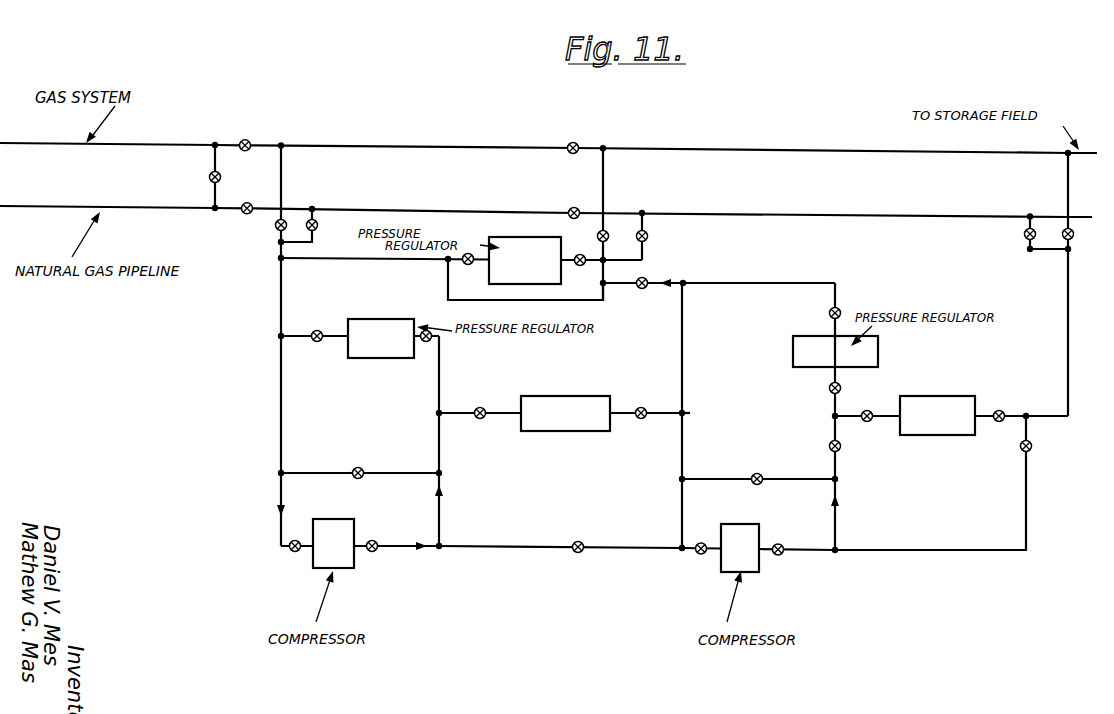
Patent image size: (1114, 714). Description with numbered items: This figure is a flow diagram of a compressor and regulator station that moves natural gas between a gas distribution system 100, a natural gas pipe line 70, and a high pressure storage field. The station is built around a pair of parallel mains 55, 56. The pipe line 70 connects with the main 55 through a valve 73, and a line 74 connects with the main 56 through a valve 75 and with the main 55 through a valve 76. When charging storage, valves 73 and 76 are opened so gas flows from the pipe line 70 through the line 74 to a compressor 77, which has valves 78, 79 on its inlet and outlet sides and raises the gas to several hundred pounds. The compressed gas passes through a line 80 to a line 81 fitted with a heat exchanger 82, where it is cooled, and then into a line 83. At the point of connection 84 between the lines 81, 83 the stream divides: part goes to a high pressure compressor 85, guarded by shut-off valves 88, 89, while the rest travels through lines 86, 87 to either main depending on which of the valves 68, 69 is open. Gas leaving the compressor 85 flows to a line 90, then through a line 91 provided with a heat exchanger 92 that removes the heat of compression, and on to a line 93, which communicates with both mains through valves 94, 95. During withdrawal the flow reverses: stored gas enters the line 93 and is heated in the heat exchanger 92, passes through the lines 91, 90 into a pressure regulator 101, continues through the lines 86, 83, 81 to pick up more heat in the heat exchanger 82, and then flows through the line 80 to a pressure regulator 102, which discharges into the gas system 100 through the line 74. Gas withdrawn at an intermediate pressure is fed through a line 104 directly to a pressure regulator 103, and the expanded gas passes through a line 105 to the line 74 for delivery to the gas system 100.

The gas distribution system 100 is at (184, 144).
The pipe line 70 is at (135, 207).
The main 55 is at (418, 211).
The main 56 is at (482, 149).
The valve 73 is at (247, 203).
The line 74 is at (281, 392).
The valve 75 is at (275, 227).
The valve 76 is at (317, 225).
The compressor 77 is at (344, 519).
The valve 78 is at (292, 552).
The valve 79 is at (378, 552).
The line 80 is at (442, 500).
The line 81 is at (450, 410).
The heat exchanger 82 is at (558, 395).
The line 83 is at (684, 358).
The point of connection 84 is at (690, 413).
The high pressure compressor 85 is at (758, 534).
The line 86 is at (659, 281).
The line 87 is at (604, 193).
The shut-off valve 88 is at (697, 556).
The shut-off valve 89 is at (780, 558).
The line 90 is at (836, 522).
The line 91 is at (850, 413).
The heat exchanger 92 is at (935, 396).
The line 93 is at (1069, 293).
The valve 94 is at (1024, 235).
The valve 95 is at (1073, 236).
The pressure regulator 101 is at (880, 352).
The pressure regulator 102 is at (388, 318).
The pressure regulator 103 is at (523, 240).
The line 104 is at (569, 260).
The line 105 is at (309, 257).
The valve 68 is at (607, 237).
The valve 69 is at (648, 236).